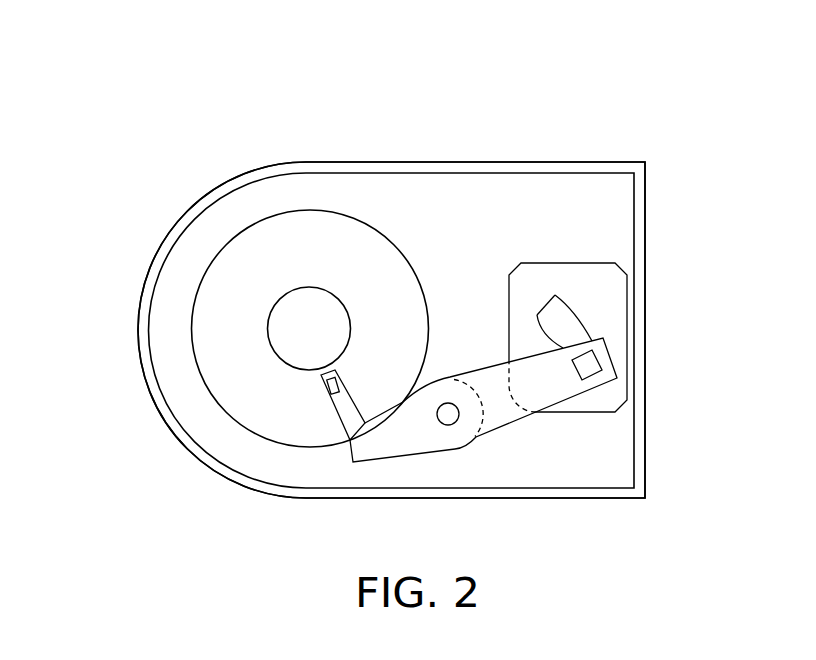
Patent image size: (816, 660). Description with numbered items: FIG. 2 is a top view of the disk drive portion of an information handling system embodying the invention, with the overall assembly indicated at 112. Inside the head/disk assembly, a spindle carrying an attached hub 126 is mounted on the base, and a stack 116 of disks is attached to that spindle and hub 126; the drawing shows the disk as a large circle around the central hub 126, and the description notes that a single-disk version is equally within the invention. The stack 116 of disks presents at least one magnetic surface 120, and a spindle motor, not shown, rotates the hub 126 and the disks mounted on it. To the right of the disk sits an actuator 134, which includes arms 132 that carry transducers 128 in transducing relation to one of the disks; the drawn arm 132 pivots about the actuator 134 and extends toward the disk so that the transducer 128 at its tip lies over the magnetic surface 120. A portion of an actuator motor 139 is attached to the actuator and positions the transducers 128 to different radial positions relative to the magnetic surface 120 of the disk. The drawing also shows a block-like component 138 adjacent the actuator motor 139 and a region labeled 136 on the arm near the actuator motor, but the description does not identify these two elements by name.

The cartridge housing 112 is at (541, 129).
The stack of disks 116 is at (168, 346).
The magnetic surface 120 is at (228, 258).
The hub 126 is at (315, 305).
The transducer 128 is at (327, 388).
The arm 132 is at (357, 448).
The actuator 134 is at (448, 403).
The brake pad 136 is at (553, 395).
The mounting block 138 is at (587, 270).
The actuator motor 139 is at (588, 363).